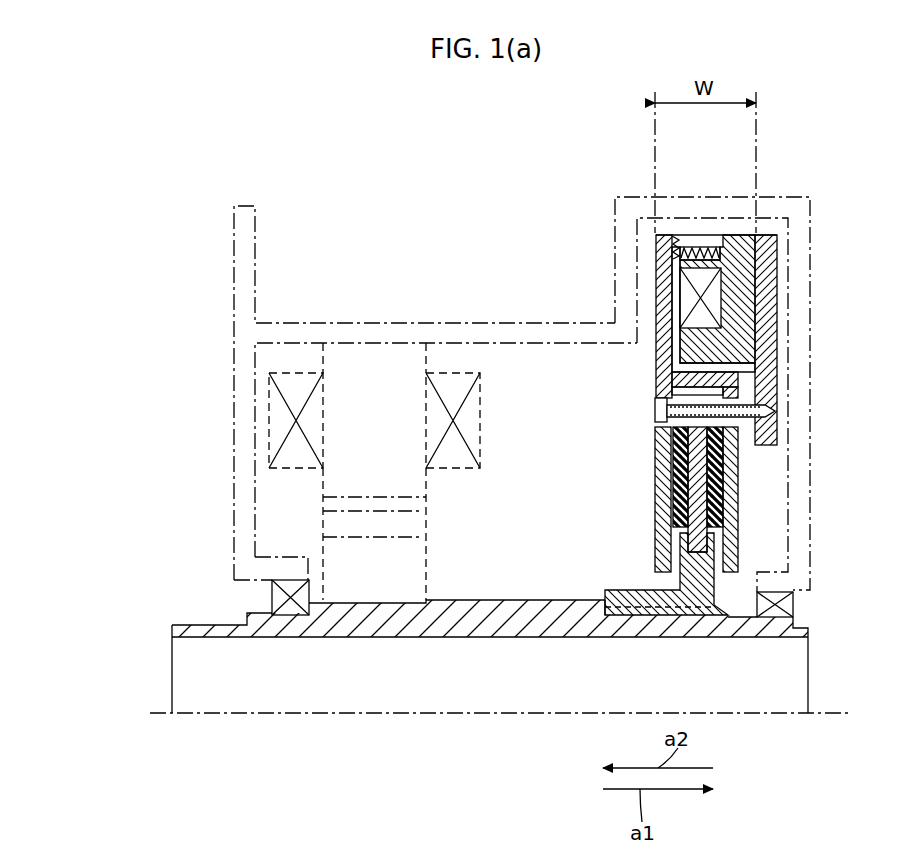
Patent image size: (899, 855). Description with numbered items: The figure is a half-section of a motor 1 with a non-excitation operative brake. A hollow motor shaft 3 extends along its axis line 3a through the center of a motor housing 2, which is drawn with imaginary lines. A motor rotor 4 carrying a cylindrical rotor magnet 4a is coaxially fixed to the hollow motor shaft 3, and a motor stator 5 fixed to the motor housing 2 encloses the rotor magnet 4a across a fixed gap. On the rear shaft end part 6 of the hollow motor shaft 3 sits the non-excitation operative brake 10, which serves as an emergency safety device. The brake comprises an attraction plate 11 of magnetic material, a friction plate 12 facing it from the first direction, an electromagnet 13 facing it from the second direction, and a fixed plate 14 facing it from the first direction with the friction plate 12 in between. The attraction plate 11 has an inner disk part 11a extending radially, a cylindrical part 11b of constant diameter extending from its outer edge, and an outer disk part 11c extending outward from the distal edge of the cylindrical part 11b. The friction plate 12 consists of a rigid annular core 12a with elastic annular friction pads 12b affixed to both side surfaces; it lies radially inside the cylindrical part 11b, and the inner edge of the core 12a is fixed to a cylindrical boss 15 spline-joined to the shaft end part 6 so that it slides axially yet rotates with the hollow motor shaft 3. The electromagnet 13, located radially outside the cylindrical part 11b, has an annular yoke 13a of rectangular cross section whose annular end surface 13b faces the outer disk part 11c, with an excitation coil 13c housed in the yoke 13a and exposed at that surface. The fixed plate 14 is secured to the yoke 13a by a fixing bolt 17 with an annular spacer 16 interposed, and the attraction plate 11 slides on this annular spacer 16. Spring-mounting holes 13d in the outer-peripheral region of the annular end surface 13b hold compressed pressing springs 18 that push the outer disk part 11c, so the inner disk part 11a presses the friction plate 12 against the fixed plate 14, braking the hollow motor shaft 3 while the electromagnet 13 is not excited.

The motor with a non-excitation operative brake 1 is at (125, 228).
The motor housing 2 is at (400, 322).
The hollow motor shaft 3 is at (160, 627).
The axis line 3a is at (385, 713).
The motor rotor 4 is at (288, 471).
The rotor magnet 4a is at (318, 515).
The motor stator 5 is at (298, 360).
The shaft end part 6 is at (658, 636).
The non-excitation operative brake 10 is at (818, 225).
The attraction plate 11 is at (709, 397).
The inner disk part 11a is at (730, 517).
The cylindrical part 11b is at (683, 362).
The outer disk part 11c is at (662, 272).
The friction plate 12 is at (725, 487).
The core 12a is at (718, 462).
The friction pads 12b is at (712, 497).
The electromagnet 13 is at (714, 252).
The yoke 13a is at (742, 297).
The annular end surface 13b is at (678, 298).
The excitation coil 13c is at (712, 303).
The spring-mounting holes 13d is at (690, 250).
The fixed plate 14 is at (657, 475).
The boss 15 is at (683, 563).
The annular spacer 16 is at (690, 393).
The fixing bolt 17 is at (652, 409).
The pressing springs 18 is at (678, 240).